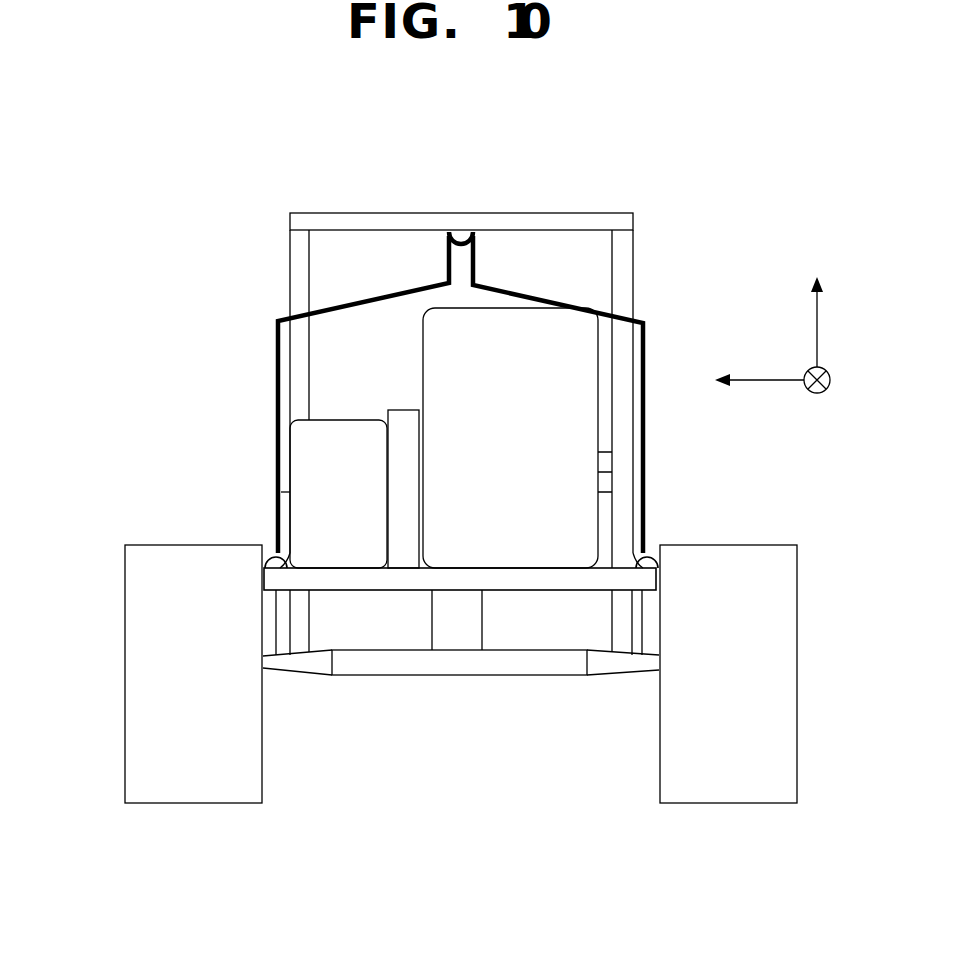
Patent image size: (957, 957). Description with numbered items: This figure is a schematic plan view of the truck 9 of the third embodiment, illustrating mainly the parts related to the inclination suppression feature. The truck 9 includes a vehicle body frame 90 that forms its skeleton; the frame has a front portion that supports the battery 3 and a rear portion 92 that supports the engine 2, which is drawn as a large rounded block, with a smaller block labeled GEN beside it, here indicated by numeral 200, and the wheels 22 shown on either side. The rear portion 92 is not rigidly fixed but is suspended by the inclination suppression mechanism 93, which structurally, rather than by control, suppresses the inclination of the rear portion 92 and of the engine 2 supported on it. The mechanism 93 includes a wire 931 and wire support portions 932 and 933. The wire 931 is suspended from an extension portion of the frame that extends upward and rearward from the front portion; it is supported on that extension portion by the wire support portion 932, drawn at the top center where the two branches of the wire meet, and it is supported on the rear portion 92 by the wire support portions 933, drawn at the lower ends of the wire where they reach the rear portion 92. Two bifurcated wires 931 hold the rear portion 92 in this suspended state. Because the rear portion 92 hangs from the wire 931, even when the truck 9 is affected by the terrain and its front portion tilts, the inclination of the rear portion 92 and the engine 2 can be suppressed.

The truck 9 is at (242, 235).
The vehicle body frame 90 is at (656, 198).
The inclination suppression mechanism 93 is at (668, 300).
The wire 931 is at (368, 297).
The wire support portion 932 is at (455, 230).
The wire support portion 933 is at (267, 553).
The battery 3 is at (275, 510).
The engine 2 is at (517, 308).
The generator 200 is at (322, 419).
The rear portion 92 is at (330, 651).
The wheel 22 is at (125, 618).